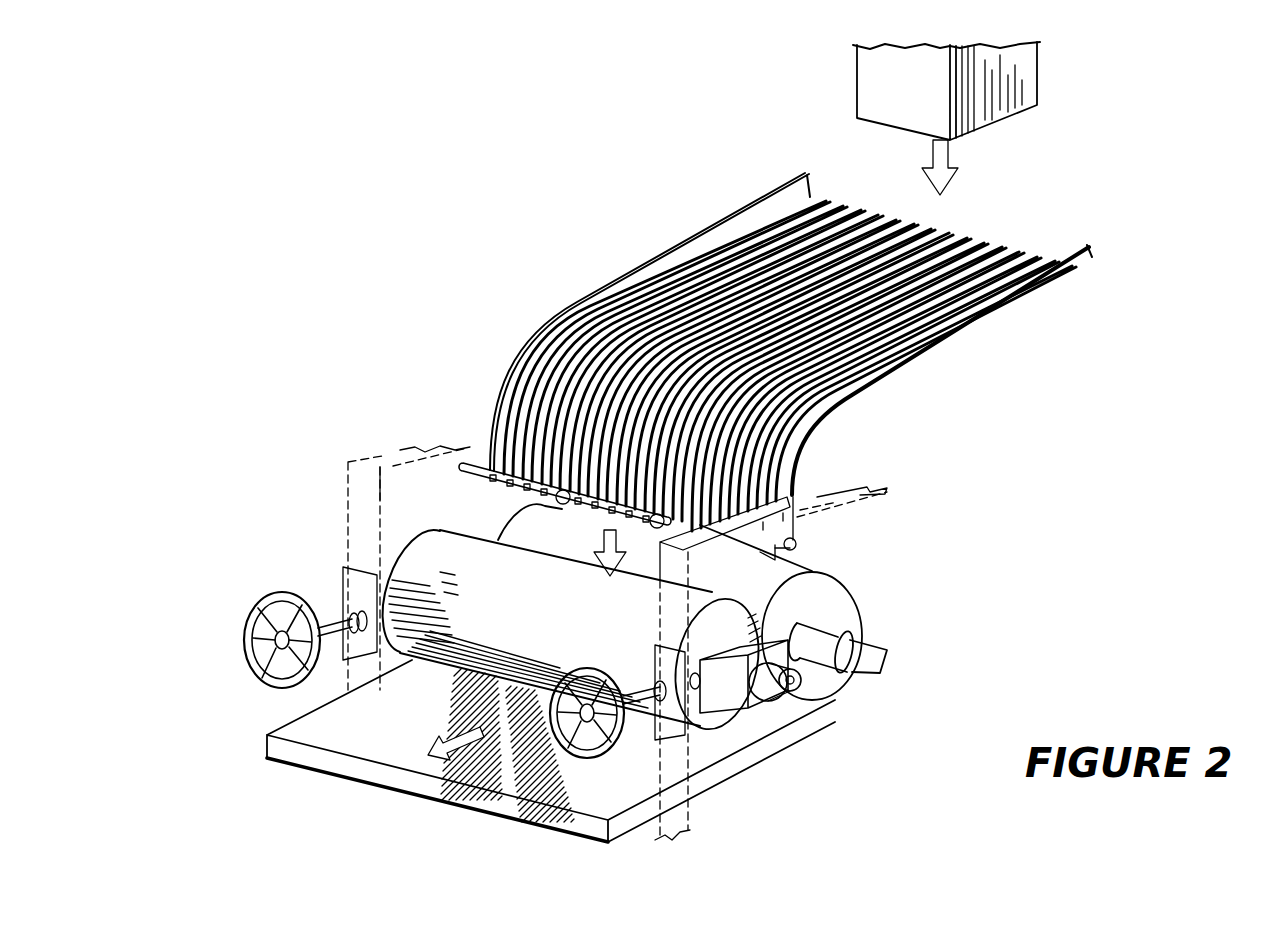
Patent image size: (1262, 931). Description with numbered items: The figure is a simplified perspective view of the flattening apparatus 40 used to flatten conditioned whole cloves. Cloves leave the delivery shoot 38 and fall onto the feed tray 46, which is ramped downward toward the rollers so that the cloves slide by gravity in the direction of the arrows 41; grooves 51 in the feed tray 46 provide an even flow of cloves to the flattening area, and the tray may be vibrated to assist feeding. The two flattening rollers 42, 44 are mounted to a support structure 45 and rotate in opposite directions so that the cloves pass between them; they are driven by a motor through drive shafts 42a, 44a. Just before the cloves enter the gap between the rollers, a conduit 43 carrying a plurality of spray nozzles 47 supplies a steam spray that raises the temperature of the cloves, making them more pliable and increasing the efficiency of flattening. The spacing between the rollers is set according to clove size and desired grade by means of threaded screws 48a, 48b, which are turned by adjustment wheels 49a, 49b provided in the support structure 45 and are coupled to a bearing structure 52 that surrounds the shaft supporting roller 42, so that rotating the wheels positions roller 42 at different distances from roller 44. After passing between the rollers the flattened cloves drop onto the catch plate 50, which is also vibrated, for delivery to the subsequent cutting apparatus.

The delivery shoot 38 is at (1020, 102).
The arrows 41 is at (950, 204).
The grooves 51 is at (988, 238).
The feed tray 46 is at (798, 352).
The support structure 45 is at (838, 497).
The conduit 43 is at (552, 435).
The spray nozzles 47 is at (655, 514).
The flattening roller 42 is at (427, 550).
The drive shaft 42a is at (795, 690).
The flattening roller 44 is at (825, 678).
The drive shaft 44a is at (877, 663).
The threaded screw 48a is at (340, 610).
The threaded screw 48b is at (633, 712).
The adjustment wheel 49a is at (258, 600).
The adjustment wheel 49b is at (590, 760).
The catch plate 50 is at (426, 797).
The bearing structure 52 is at (735, 693).
The flattening apparatus 40 is at (972, 594).